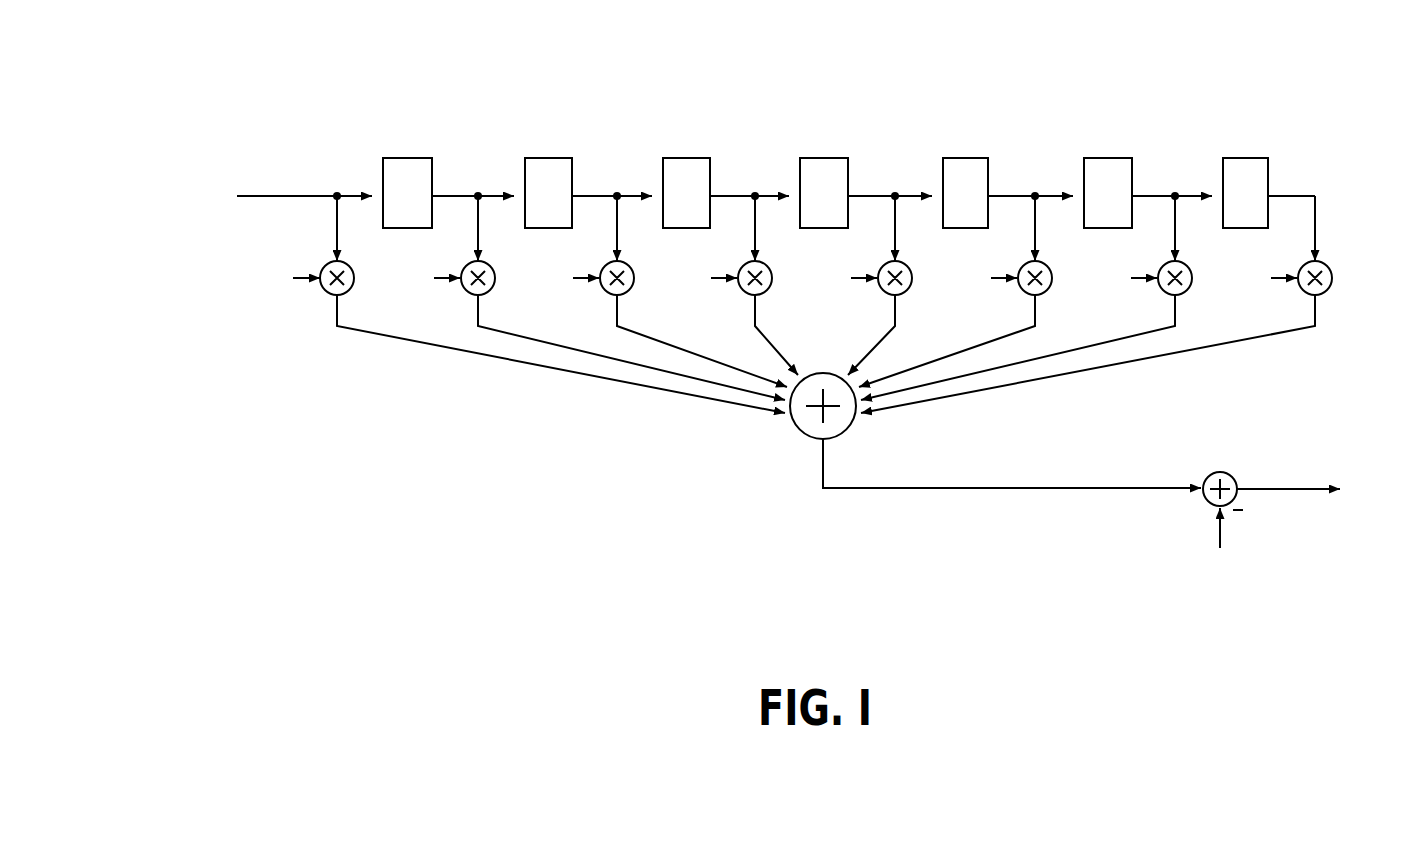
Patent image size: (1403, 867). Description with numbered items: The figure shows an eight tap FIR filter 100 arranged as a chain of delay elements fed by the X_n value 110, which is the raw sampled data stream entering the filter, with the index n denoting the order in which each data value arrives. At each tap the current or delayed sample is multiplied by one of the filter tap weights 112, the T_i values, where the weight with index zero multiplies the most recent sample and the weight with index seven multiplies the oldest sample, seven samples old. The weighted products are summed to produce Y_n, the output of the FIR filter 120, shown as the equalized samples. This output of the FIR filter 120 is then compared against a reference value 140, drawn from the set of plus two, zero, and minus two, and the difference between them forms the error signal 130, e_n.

The FIR filter 100 is at (1020, 86).
The X_n value 110 is at (200, 155).
The filter tap weights 112 is at (258, 274).
The output of the FIR filter 120 is at (1101, 440).
The error signal 130 is at (1300, 480).
The reference value 140 is at (1180, 553).